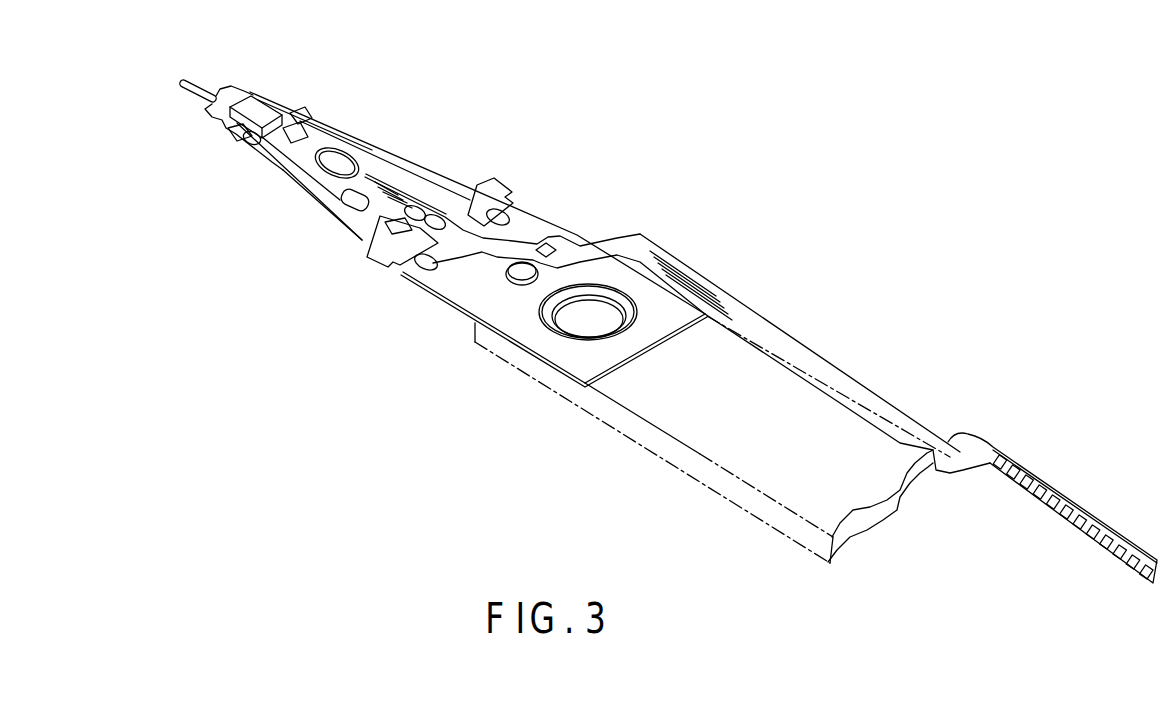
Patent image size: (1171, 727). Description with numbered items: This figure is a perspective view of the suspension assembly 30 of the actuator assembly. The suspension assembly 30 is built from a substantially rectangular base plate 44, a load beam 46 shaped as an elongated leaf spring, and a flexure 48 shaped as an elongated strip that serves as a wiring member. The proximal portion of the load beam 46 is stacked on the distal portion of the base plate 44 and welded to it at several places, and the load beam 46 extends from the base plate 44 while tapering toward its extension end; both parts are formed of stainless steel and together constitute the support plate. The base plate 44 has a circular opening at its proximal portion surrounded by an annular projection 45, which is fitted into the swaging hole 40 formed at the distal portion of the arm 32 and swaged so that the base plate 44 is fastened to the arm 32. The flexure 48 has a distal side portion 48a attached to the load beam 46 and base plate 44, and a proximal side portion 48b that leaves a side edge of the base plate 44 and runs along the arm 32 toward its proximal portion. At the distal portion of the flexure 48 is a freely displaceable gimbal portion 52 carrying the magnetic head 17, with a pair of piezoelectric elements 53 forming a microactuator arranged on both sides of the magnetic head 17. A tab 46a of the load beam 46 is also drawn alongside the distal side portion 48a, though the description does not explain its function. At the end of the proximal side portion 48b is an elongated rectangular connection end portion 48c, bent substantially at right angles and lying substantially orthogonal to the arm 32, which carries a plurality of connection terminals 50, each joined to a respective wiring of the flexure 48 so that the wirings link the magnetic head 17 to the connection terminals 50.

The suspension assembly 30 is at (562, 197).
The magnetic head 17 is at (260, 97).
The piezoelectric elements 53 is at (283, 99).
The gimbal portion 52 is at (256, 158).
The load beam 46 is at (433, 177).
The tab 46a is at (368, 222).
The flexure 48 is at (731, 289).
The distal side portion 48a is at (411, 225).
The proximal side portion 48b is at (868, 381).
The connection end portion 48c is at (1038, 463).
The base plate 44 is at (515, 314).
The swaging hole 40 is at (580, 323).
The annular projection 45 is at (620, 323).
The arm 32 is at (750, 455).
The connection terminals 50 is at (1021, 486).